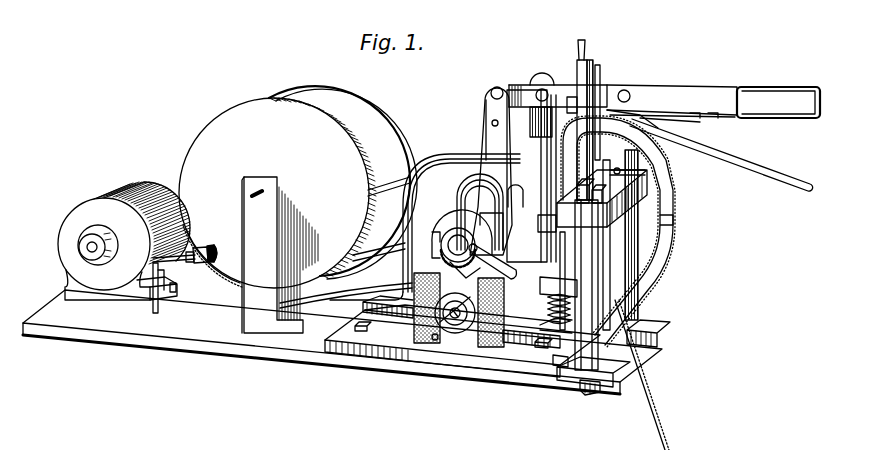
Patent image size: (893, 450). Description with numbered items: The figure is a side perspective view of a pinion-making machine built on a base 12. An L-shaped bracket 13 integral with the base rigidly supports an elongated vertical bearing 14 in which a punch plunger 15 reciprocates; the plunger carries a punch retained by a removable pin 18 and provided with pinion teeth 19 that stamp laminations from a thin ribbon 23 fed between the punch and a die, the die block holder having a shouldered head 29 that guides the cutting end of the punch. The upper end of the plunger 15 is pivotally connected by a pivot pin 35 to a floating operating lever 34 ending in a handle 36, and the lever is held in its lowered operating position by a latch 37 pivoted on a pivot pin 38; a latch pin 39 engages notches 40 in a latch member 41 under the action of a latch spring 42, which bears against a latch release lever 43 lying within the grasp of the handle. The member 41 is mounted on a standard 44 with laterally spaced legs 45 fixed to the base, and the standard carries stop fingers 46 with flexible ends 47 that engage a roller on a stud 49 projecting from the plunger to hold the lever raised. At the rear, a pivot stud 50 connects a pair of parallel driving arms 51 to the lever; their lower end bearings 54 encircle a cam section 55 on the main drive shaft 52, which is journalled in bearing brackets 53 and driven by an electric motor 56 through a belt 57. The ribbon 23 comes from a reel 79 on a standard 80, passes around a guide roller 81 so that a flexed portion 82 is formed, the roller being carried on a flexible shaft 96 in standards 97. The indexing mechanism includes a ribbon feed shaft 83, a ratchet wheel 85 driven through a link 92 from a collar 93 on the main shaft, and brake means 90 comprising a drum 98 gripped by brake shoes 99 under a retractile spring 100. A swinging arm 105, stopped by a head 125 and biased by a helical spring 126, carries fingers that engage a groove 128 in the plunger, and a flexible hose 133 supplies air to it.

The base 12 is at (342, 344).
The L-shaped bracket 13 is at (461, 201).
The bearing 14 is at (531, 176).
The plunger 15 is at (625, 293).
The removable pin 18 is at (620, 240).
The pinion teeth 19 is at (545, 366).
The ribbon 23 is at (656, 375).
The shouldered head 29 is at (527, 365).
The operating lever 34 is at (672, 77).
The pivot pin 35 is at (558, 73).
The handle 36 is at (778, 85).
The latch 37 is at (631, 231).
The pivot pin 38 is at (626, 72).
The latch pin 39 is at (596, 177).
The notches 40 is at (660, 167).
The latch member 41 is at (610, 177).
The latch spring 42 is at (674, 125).
The latch release lever 43 is at (721, 155).
The standard 44 is at (632, 198).
The legs 45 is at (651, 320).
The stop fingers 46 is at (603, 93).
The flexible ends 47 is at (580, 111).
The stud 49 is at (553, 93).
The pivot stud 50 is at (497, 73).
The driving arms 51 is at (493, 104).
The main drive shaft 52 is at (437, 238).
The bearing brackets 53 is at (358, 223).
The lower end bearings 54 is at (560, 251).
The cam section 55 is at (486, 171).
The electric motor 56 is at (124, 224).
The belt 57 is at (381, 195).
The reel 79 is at (298, 189).
The standard 80 is at (260, 205).
The guide roller 81 is at (180, 313).
The flexed portion 82 is at (208, 312).
The ribbon feed shaft 83 is at (454, 348).
The ribbon feed ratchet wheel 85 is at (462, 361).
The brake means 90 is at (441, 357).
The link 92 is at (399, 336).
The collar 93 is at (434, 261).
The flexible shaft 96 is at (167, 316).
The standards 97 is at (181, 323).
The drum 98 is at (448, 339).
The brake shoes 99 is at (437, 361).
The retractile spring 100 is at (462, 349).
The swinging arm 105 is at (552, 390).
The head 125 is at (651, 245).
The helical spring 126 is at (581, 412).
The groove 128 is at (636, 301).
The flexible hose 133 is at (689, 218).